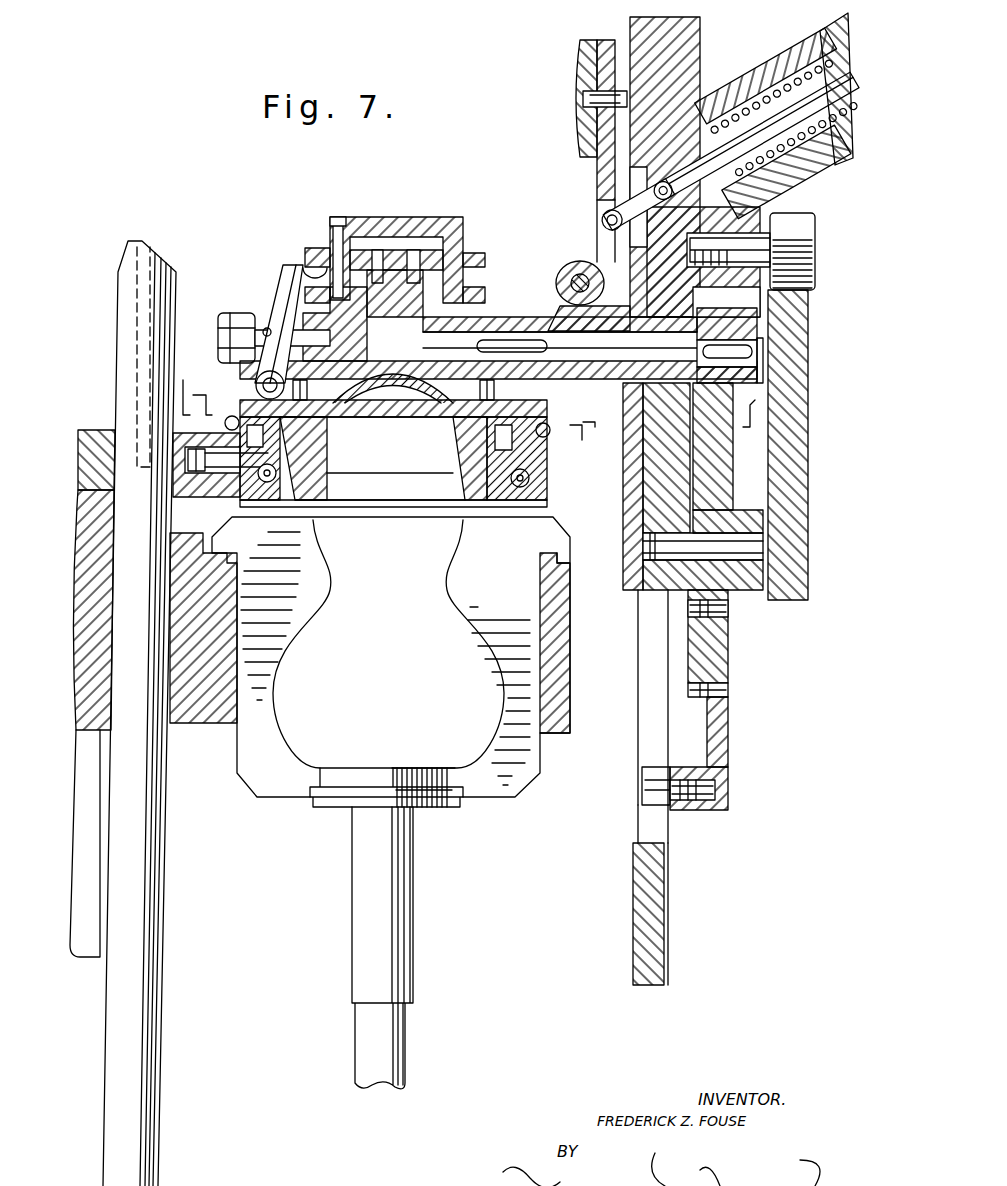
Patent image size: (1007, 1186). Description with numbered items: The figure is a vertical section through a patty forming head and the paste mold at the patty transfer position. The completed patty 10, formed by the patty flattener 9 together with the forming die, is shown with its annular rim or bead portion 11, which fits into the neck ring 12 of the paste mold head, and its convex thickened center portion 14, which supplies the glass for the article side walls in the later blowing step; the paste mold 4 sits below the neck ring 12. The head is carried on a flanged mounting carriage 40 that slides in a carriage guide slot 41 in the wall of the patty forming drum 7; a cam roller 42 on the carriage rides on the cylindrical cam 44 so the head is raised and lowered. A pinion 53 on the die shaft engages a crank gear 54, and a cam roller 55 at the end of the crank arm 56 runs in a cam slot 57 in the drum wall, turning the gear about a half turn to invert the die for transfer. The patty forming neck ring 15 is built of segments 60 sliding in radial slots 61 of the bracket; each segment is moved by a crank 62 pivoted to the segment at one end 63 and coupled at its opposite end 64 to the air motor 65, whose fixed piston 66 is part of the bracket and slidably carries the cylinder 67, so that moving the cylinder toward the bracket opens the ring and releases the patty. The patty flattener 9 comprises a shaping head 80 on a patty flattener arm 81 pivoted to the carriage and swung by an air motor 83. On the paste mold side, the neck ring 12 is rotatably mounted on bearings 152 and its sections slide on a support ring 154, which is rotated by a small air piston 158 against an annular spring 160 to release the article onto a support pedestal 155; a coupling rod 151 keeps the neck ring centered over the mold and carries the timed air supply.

The paste mold 4 is at (574, 533).
The patty forming drum 7 is at (640, 886).
The patty flattener 9 is at (606, 36).
The patty 10 is at (413, 398).
The annular rim or bead portion 11 is at (357, 403).
The neck ring 12 is at (550, 496).
The thickened center portion 14 is at (443, 367).
The patty forming neck ring 15 is at (470, 398).
The mounting carriage 40 is at (750, 216).
The carriage guide slot 41 is at (657, 692).
The cam roller 42 is at (809, 233).
The cylindrical cam 44 is at (802, 397).
The pinion 53 is at (747, 330).
The crank gear 54 is at (722, 493).
The cam roller 55 is at (662, 774).
The crank arm 56 is at (723, 708).
The cam slot 57 is at (650, 830).
The neck ring segment 60 is at (255, 383).
The radial slot 61 is at (290, 417).
The crank 62 is at (280, 292).
The crank end 63 is at (228, 362).
The crank opposite end 64 is at (325, 248).
The air motor 65 is at (431, 217).
The fixed piston 66 is at (360, 250).
The cylinder 67 is at (465, 255).
The shaping head 80 is at (580, 71).
The patty flattener arm 81 is at (596, 177).
The air motor 83 is at (760, 58).
The coupling rod 151 is at (176, 272).
The bearings 152 is at (270, 500).
The support ring 154 is at (303, 476).
The support pedestal 155 is at (412, 792).
The air piston 158 is at (192, 500).
The annular spring 160 is at (225, 425).